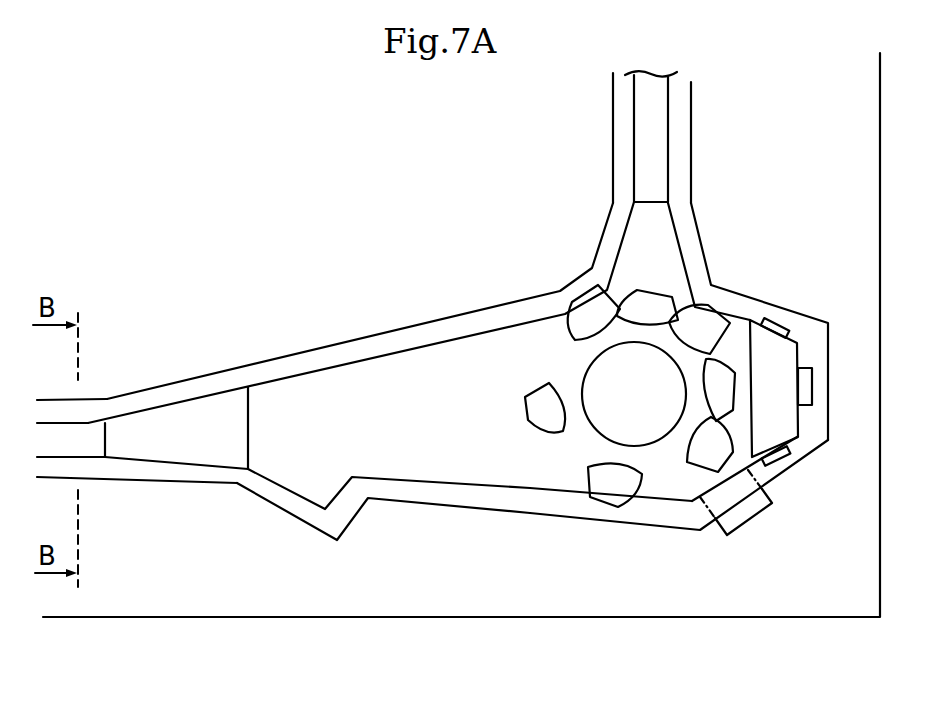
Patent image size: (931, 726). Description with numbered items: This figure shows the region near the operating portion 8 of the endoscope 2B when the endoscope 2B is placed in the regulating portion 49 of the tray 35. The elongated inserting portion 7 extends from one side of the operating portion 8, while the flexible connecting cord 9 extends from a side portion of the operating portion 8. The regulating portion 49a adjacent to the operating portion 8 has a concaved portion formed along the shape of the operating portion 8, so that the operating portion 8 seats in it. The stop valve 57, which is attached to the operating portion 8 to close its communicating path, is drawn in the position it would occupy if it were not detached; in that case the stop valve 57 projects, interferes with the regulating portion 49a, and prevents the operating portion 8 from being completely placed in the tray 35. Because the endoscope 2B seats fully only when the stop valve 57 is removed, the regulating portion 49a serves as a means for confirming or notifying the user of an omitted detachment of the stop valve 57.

The connecting cord 9 is at (633, 135).
The endoscope 2B is at (447, 332).
The inserting portion 7 is at (88, 421).
The operating portion 8 is at (481, 484).
The regulating portion 49 is at (163, 468).
The tray 35 is at (342, 603).
The regulating portion 49a is at (697, 530).
The stop valve 57 is at (743, 523).